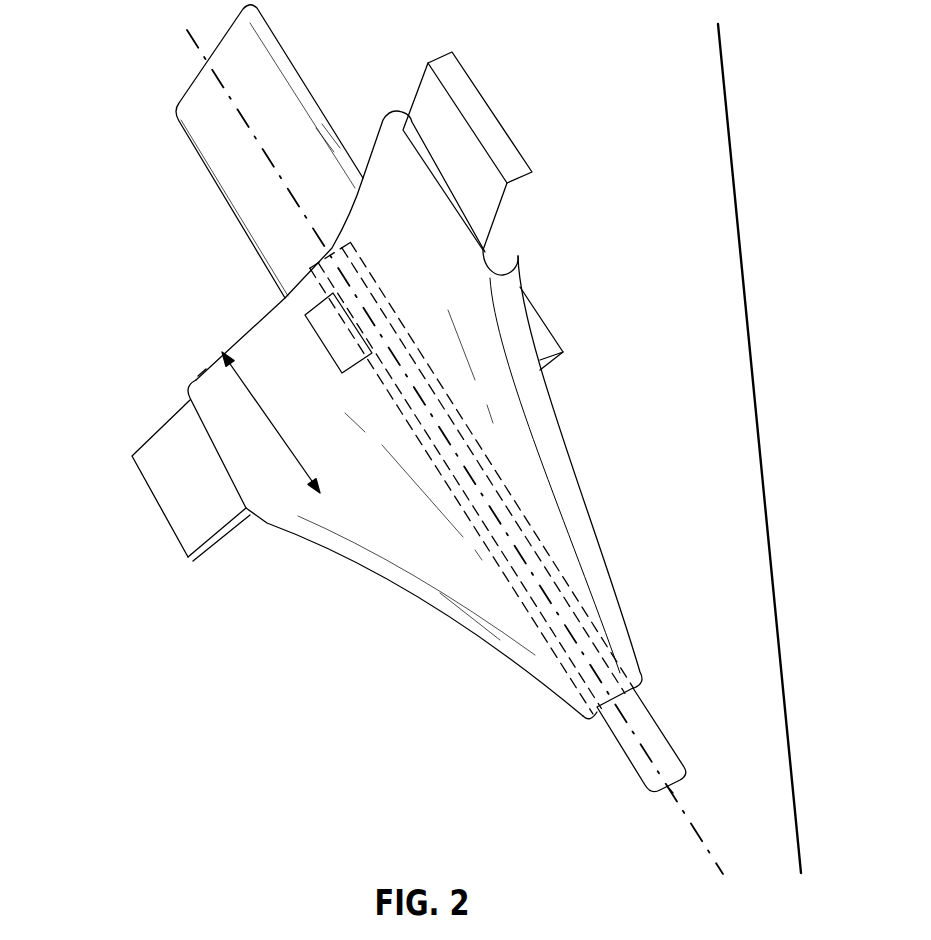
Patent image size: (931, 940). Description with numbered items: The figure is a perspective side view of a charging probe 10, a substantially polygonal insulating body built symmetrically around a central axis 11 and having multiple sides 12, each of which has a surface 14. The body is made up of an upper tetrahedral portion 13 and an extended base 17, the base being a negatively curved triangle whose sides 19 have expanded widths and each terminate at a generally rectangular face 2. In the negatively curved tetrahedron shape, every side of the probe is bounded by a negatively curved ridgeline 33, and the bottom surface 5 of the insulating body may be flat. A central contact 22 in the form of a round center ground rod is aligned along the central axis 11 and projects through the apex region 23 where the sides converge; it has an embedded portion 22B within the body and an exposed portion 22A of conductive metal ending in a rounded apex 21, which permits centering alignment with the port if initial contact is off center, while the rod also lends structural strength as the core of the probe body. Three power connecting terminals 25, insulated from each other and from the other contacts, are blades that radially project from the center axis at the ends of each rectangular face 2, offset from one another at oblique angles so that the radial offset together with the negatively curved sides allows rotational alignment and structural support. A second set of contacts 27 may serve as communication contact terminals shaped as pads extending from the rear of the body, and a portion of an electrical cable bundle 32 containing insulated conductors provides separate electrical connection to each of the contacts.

The charging probe 10 is at (76, 181).
The central axis 11 is at (693, 822).
The sides 12 is at (757, 388).
The upper tetrahedral portion 13 is at (457, 574).
The surface 14 is at (355, 535).
The extended base 17 is at (440, 292).
The sides of the base 19 is at (243, 438).
The rectangular face 2 is at (505, 253).
The rounded apex 21 is at (682, 773).
The central contact 22 is at (632, 770).
The exposed portion 22A is at (655, 718).
The embedded portion 22B is at (532, 548).
The apex region 23 is at (589, 715).
The power connecting terminals 25 is at (490, 113).
The communication contact terminals 27 is at (320, 340).
The electrical cable bundle 32 is at (222, 193).
The negatively curved ridgeline 33 is at (495, 650).
The bottom surface 5 is at (198, 376).